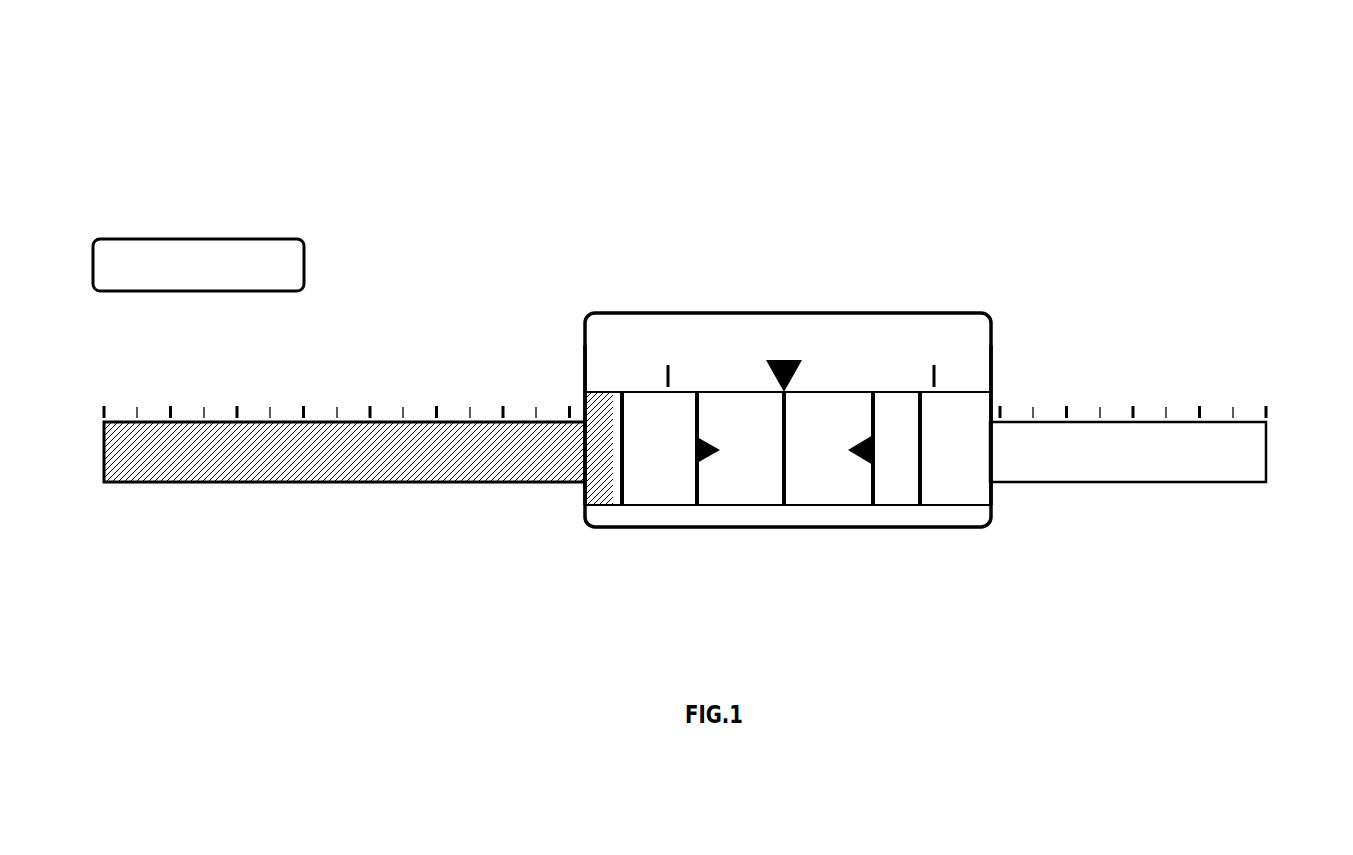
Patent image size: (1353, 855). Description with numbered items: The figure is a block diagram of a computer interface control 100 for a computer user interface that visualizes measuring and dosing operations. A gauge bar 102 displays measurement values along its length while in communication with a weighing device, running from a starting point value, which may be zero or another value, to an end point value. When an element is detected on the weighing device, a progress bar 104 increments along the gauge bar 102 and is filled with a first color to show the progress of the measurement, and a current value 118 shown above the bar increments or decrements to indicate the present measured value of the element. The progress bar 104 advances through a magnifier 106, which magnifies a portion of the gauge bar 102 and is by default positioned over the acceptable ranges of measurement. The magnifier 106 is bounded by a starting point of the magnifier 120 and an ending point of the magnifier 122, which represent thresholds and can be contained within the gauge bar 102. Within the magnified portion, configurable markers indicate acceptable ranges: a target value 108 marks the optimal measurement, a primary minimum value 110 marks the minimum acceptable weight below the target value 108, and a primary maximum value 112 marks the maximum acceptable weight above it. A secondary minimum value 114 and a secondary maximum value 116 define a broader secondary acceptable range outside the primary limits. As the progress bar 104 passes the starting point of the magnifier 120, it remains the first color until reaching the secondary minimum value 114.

The computer interface control 100 is at (1164, 104).
The gauge bar 102 is at (1266, 455).
The progress bar 104 is at (345, 484).
The magnifier 106 is at (868, 312).
The target value 108 is at (795, 354).
The primary minimum value 110 is at (718, 452).
The primary maximum value 112 is at (857, 442).
The secondary minimum value 114 is at (627, 452).
The secondary maximum value 116 is at (922, 453).
The current value 118 is at (246, 187).
The starting point of the magnifier 120 is at (584, 352).
The ending point of the magnifier 122 is at (992, 352).